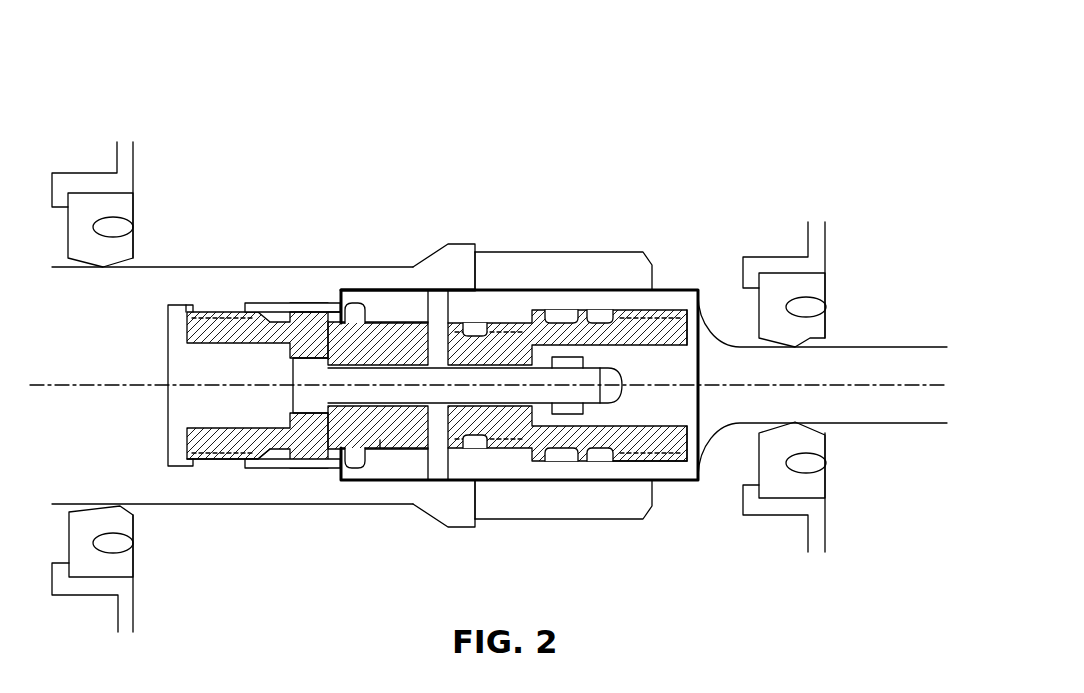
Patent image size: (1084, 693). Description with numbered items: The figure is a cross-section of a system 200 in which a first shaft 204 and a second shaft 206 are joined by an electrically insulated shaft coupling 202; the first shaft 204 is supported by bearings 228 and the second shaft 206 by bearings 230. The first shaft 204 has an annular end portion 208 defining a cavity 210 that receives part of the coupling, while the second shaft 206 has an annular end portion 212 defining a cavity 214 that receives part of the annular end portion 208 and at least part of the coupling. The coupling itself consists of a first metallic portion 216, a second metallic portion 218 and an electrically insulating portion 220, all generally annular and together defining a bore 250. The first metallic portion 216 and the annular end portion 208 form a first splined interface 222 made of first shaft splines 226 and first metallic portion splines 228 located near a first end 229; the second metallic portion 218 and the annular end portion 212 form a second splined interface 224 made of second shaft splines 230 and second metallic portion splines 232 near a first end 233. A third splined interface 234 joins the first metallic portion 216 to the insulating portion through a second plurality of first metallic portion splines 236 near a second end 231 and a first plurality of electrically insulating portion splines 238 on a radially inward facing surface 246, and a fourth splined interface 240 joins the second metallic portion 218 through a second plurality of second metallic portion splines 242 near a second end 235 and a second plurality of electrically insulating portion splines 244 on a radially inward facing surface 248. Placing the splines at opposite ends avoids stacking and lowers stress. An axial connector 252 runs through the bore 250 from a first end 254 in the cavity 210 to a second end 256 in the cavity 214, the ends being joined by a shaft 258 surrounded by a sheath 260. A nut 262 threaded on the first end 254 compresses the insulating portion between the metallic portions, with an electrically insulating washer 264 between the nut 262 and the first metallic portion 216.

The system 200 is at (143, 70).
The electrically insulated shaft coupling 202 is at (428, 180).
The first shaft 204 is at (838, 418).
The second shaft 206 is at (150, 498).
The annular end portion 208 is at (692, 258).
The cavity 210 is at (672, 394).
The annular end portion 212 is at (592, 245).
The cavity 214 is at (250, 394).
The first metallic portion 216 is at (553, 323).
The second metallic portion 218 is at (224, 330).
The electrically insulating portion 220 is at (450, 313).
The first splined interface 222 is at (668, 486).
The second splined interface 224 is at (250, 485).
The first shaft splines 226 is at (627, 463).
The first metallic portion splines 228 is at (820, 292).
The first end 229 is at (692, 318).
The second shaft splines 230 is at (129, 203).
The second end 231 is at (474, 290).
The second metallic portion splines 232 is at (227, 463).
The first end 233 is at (185, 332).
The third splined interface 234 is at (510, 475).
The second end 235 is at (417, 325).
The second plurality of first metallic portion splines 236 is at (487, 447).
The first plurality of electrically insulating portion splines 238 is at (467, 447).
The fourth splined interface 240 is at (400, 470).
The second plurality of second metallic portion splines 242 is at (363, 447).
The second plurality of electrically insulating portion splines 244 is at (382, 447).
The radially inward facing surface 246 is at (515, 323).
The radially inward facing surface 248 is at (347, 448).
The bore 250 is at (496, 347).
The axial connector 252 is at (380, 370).
The first end 254 is at (612, 373).
The second end 256 is at (282, 337).
The shaft 258 is at (317, 340).
The sheath 260 is at (332, 382).
The nut 262 is at (583, 453).
The electrically insulating washer 264 is at (555, 418).